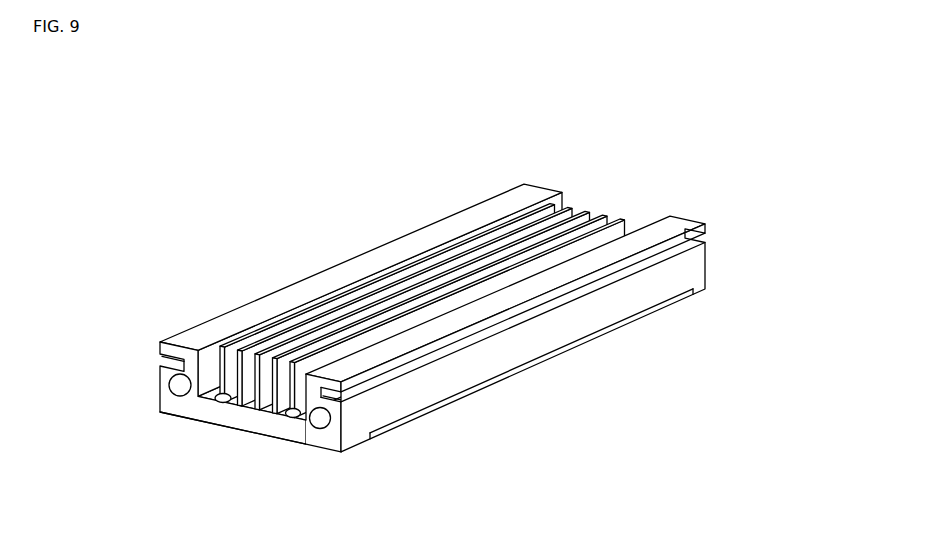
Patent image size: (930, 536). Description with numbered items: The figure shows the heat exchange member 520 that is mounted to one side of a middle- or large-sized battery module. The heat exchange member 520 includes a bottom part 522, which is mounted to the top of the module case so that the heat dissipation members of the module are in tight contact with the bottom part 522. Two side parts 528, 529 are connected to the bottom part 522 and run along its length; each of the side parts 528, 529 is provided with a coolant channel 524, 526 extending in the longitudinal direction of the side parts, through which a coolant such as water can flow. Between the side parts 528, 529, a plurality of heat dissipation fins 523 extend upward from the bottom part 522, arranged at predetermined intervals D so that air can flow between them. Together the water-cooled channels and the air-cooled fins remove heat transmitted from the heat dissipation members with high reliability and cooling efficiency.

The heat exchange member 520 is at (160, 116).
The bottom part 522 is at (485, 390).
The heat dissipation fins 523 is at (432, 252).
The coolant channel 524 is at (190, 382).
The coolant channel 526 is at (328, 412).
The side part 528 is at (515, 193).
The side part 529 is at (705, 223).
The predetermined interval D is at (583, 185).